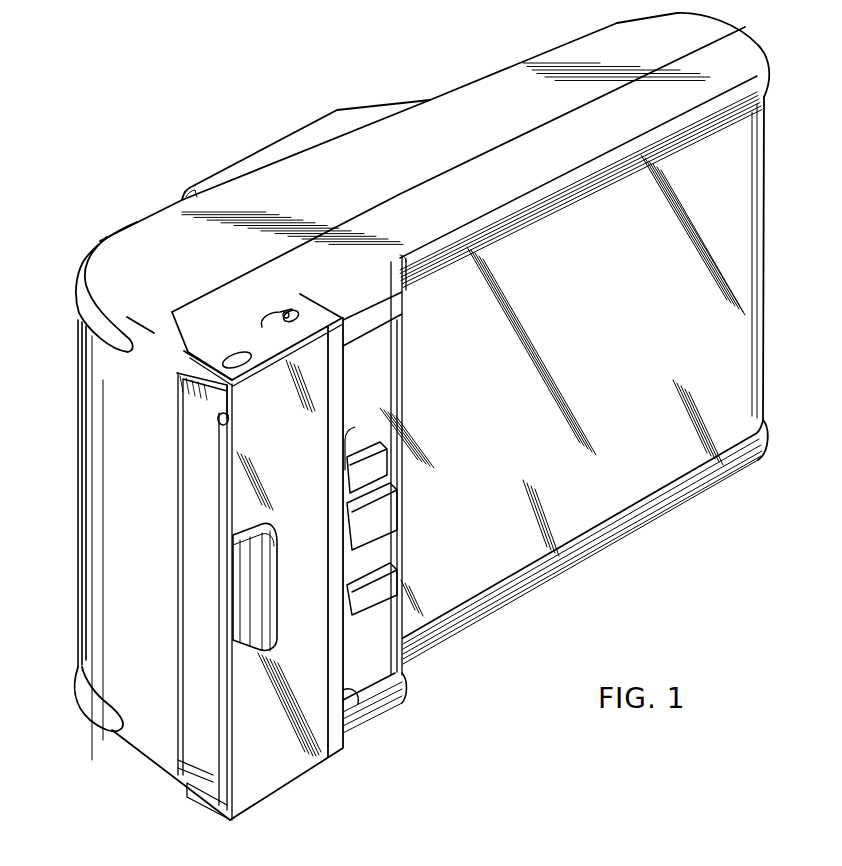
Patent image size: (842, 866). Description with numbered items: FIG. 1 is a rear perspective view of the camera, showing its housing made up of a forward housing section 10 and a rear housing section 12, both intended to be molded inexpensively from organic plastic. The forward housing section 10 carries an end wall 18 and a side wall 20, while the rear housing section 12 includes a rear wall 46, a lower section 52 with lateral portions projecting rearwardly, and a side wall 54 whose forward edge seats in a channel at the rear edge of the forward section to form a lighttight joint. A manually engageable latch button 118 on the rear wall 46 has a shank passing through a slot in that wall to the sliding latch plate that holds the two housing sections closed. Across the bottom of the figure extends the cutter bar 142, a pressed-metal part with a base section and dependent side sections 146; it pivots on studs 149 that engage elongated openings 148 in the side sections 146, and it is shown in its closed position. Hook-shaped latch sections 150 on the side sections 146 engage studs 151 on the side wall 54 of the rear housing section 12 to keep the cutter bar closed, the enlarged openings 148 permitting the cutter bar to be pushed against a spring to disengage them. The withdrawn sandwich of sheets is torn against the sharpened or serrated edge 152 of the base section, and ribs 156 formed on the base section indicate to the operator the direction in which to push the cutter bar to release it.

The forward housing section 10 is at (328, 134).
The rear housing section 12 is at (633, 554).
The end wall 18 is at (153, 539).
The side wall 20 is at (370, 188).
The rear wall 46 is at (616, 349).
The lower section 52 is at (362, 677).
The side wall 54 is at (282, 314).
The latch block 118 is at (388, 503).
The cutter bar 142 is at (296, 784).
The side sections 146 is at (233, 345).
The elongated openings 148 is at (253, 365).
The studs 149 is at (226, 354).
The hook-shaped latch sections 150 is at (291, 309).
The studs 151 is at (285, 311).
The edge 152 is at (356, 702).
The ribs 156 is at (336, 385).